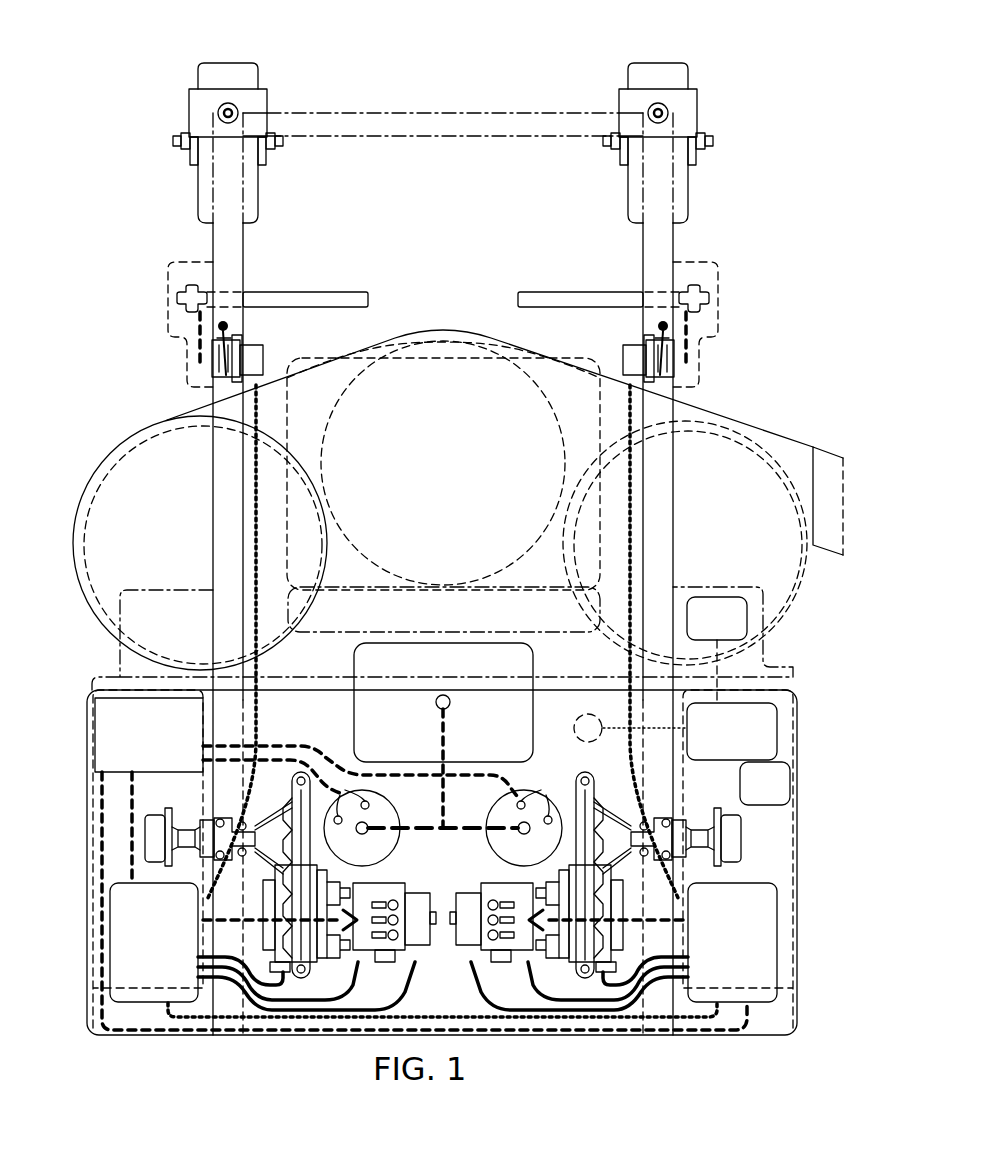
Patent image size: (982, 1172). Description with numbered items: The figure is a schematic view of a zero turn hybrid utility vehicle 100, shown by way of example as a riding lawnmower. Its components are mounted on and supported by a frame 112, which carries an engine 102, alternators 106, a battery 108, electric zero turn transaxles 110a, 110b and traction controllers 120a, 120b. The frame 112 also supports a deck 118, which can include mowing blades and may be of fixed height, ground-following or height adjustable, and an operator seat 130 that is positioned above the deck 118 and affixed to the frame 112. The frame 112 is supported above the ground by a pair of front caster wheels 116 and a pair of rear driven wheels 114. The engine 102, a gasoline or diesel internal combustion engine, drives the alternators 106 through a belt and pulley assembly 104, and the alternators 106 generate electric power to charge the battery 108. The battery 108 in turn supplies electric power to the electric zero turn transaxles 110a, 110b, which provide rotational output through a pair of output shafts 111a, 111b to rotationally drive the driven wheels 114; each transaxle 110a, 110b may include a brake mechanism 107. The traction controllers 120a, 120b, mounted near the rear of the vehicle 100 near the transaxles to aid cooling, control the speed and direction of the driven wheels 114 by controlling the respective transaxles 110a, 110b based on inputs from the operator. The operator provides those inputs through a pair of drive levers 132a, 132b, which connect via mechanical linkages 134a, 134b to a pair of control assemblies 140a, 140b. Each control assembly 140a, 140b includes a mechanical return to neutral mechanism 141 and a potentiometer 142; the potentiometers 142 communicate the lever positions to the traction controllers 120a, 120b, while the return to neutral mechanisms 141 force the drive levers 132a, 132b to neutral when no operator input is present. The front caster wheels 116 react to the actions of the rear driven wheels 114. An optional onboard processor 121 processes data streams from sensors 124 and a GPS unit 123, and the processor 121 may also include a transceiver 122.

The zero turn hybrid utility vehicle 100 is at (131, 130).
The engine 102 is at (414, 735).
The belt and pulley assembly 104 is at (455, 735).
The alternators 106 is at (400, 845).
The brake mechanism 107 is at (432, 906).
The battery 108 is at (167, 745).
The electric zero turn transaxle 110a is at (656, 936).
The electric zero turn transaxle 110b is at (230, 936).
The output shaft 111a is at (704, 825).
The output shaft 111b is at (182, 825).
The frame 112 is at (213, 243).
The driven wheels 114 is at (93, 968).
The caster wheels 116 is at (228, 63).
The deck 118 is at (170, 418).
The traction controller 120a is at (757, 920).
The traction controller 120b is at (178, 920).
The onboard processor 121 is at (750, 743).
The transceiver 122 is at (735, 630).
The GPS unit 123 is at (783, 795).
The sensors 124 is at (575, 726).
The operator seat 130 is at (542, 633).
The drive lever 132a is at (541, 292).
The drive lever 132b is at (345, 292).
The mechanical linkage 134a is at (686, 327).
The mechanical linkage 134b is at (200, 327).
The control assembly 140a is at (718, 358).
The control assembly 140b is at (168, 358).
The return to neutral mechanism 141 is at (228, 327).
The potentiometer 142 is at (263, 357).